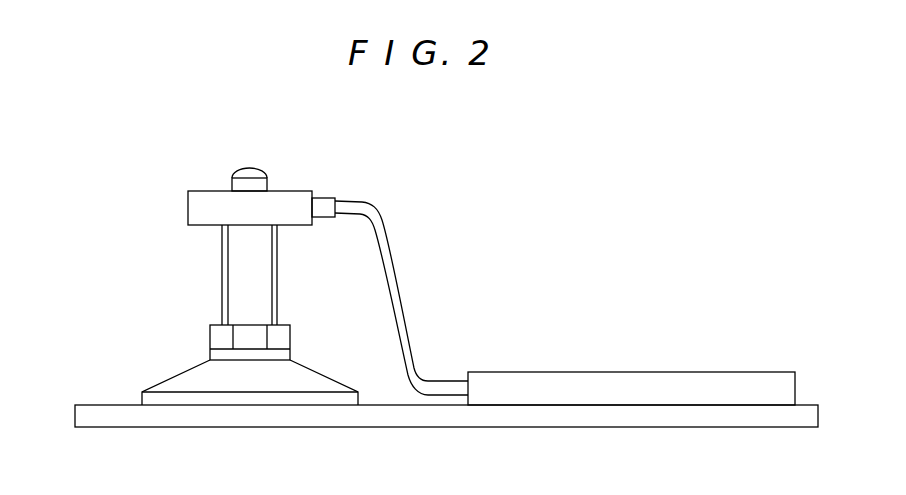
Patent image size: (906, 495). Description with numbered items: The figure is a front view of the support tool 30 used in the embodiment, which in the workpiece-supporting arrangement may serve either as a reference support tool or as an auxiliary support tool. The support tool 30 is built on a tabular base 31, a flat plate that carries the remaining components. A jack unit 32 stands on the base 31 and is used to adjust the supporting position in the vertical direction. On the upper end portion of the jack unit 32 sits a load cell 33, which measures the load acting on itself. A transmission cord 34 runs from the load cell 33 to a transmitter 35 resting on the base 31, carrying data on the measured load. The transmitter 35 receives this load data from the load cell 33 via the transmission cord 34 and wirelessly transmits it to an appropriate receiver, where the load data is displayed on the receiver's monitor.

The support tool 30 is at (615, 224).
The tabular base 31 is at (446, 374).
The jack unit 32 is at (205, 275).
The load cell 33 is at (218, 196).
The transmission cord 34 is at (414, 298).
The transmitter 35 is at (631, 346).